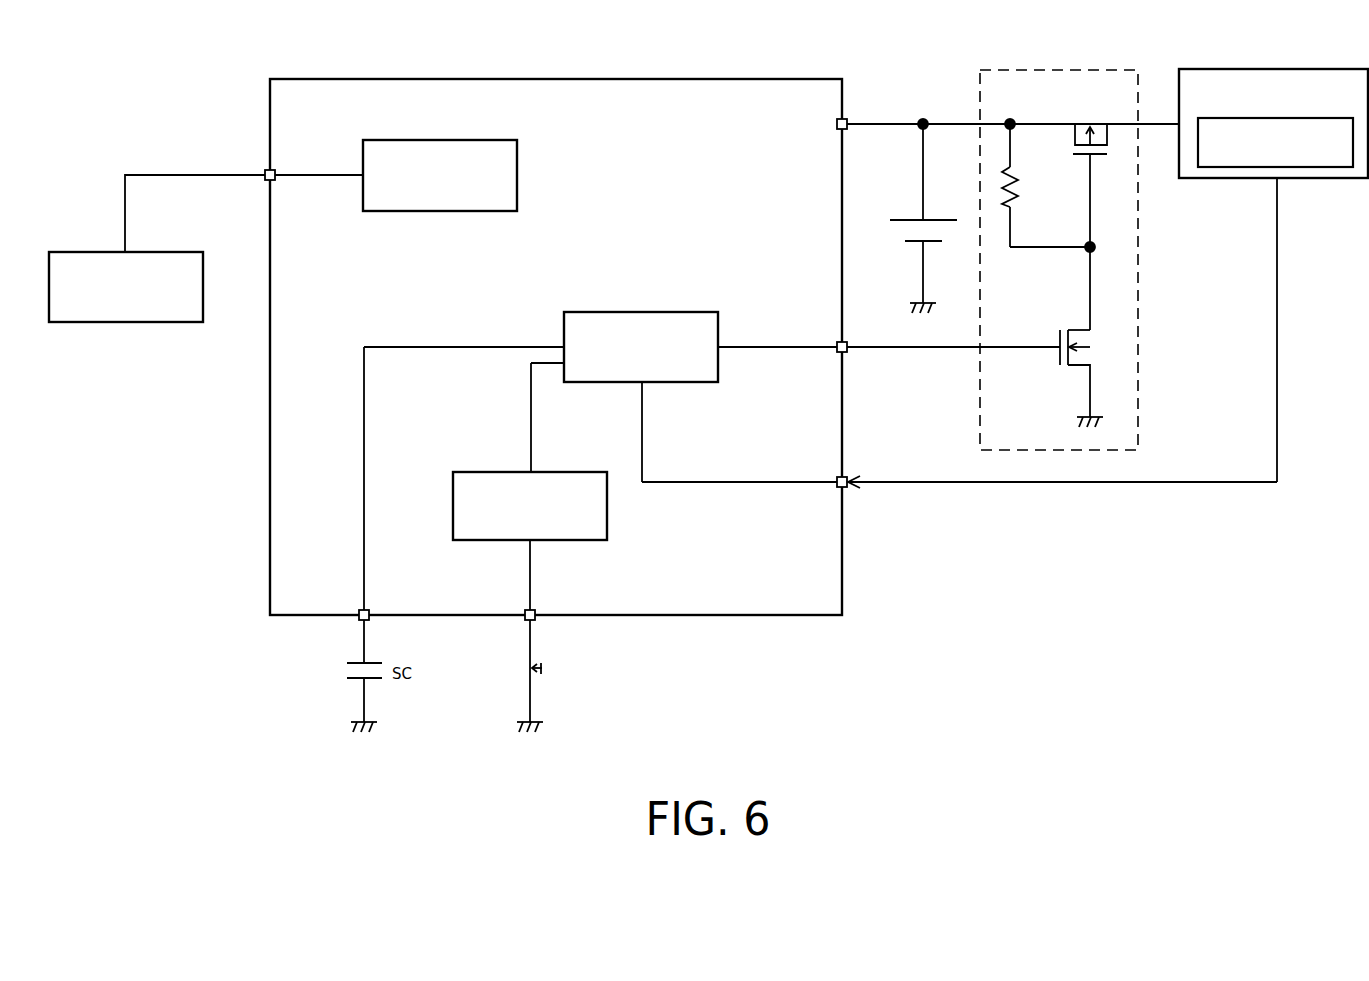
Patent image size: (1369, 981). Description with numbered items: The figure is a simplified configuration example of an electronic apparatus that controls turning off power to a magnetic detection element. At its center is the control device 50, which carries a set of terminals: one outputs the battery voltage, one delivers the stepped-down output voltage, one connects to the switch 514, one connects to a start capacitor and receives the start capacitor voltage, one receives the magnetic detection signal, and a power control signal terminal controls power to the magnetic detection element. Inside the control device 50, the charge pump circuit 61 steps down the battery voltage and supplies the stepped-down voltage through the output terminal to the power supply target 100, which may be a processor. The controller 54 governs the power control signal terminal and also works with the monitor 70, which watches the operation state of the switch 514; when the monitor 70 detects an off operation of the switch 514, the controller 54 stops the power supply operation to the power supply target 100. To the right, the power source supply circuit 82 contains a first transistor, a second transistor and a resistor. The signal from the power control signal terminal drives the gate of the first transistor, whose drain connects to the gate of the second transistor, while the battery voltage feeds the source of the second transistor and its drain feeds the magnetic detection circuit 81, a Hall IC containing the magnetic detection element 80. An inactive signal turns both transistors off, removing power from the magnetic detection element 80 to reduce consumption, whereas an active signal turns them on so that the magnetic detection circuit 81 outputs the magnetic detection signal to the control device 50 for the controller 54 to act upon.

The control device 50 is at (767, 617).
The charge pump circuit 61 is at (519, 177).
The power supply target 100 is at (127, 323).
The controller 54 is at (640, 311).
The monitor 70 is at (452, 508).
The switch 514 is at (544, 669).
The power source supply circuit 82 is at (1058, 70).
The magnetic detection circuit 81 is at (1275, 69).
The magnetic detection element 80 is at (1333, 168).